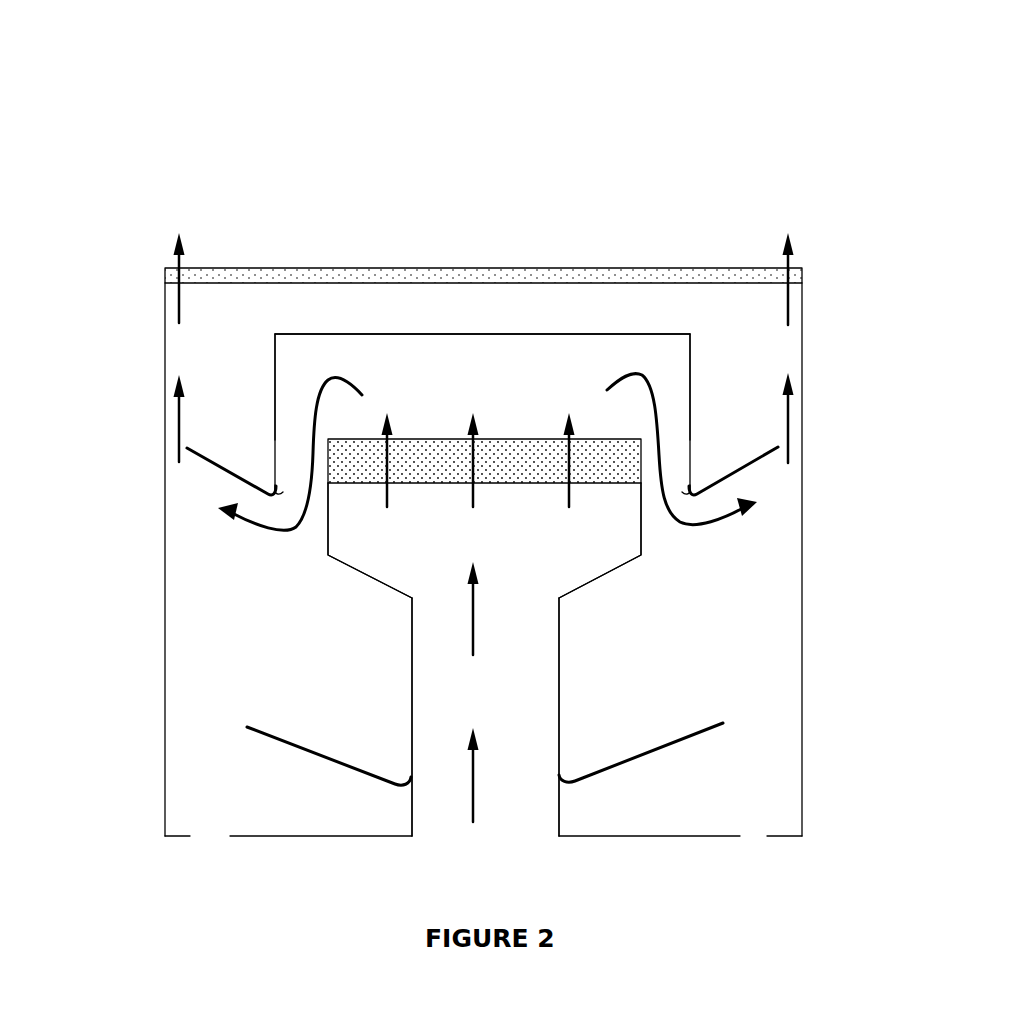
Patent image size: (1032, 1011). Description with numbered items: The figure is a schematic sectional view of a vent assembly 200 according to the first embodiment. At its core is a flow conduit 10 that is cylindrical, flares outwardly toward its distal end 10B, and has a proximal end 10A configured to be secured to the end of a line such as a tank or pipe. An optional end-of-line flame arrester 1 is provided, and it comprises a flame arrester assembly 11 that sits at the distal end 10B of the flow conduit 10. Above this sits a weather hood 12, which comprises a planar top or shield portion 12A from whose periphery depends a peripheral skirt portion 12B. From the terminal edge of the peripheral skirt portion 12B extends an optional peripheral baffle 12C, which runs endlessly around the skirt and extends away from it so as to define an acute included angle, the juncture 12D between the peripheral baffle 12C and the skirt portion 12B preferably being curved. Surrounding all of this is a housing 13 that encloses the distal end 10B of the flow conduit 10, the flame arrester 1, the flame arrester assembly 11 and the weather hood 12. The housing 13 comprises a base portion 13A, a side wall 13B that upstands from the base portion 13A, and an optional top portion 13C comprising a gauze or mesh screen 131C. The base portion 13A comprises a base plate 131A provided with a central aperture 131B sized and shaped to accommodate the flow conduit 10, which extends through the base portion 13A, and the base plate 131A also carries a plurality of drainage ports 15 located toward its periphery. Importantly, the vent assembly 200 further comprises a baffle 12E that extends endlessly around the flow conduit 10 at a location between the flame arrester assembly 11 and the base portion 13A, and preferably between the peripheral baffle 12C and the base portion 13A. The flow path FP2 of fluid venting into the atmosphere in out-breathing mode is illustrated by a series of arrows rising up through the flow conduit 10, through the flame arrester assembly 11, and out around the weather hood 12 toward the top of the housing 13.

The vent assembly 200 is at (693, 118).
The flame arrester 1 is at (636, 585).
The flow conduit 10 is at (407, 733).
The proximal end 10A is at (559, 823).
The distal end 10B is at (327, 542).
The flame arrester assembly 11 is at (437, 453).
The weather hood 12 is at (330, 333).
The shield portion 12A is at (427, 333).
The peripheral skirt portion 12B is at (272, 437).
The peripheral baffle 12C is at (265, 468).
The juncture 12D is at (262, 493).
The baffle 12E is at (290, 748).
The housing 13 is at (802, 610).
The base portion 13A is at (658, 836).
The side wall 13B is at (802, 745).
The top portion 13C is at (803, 278).
The base plate 131A is at (800, 837).
The central aperture 131B is at (558, 835).
The gauze or mesh screen 131C is at (650, 272).
The drainage ports 15 is at (213, 832).
The flow path FP2 is at (470, 778).